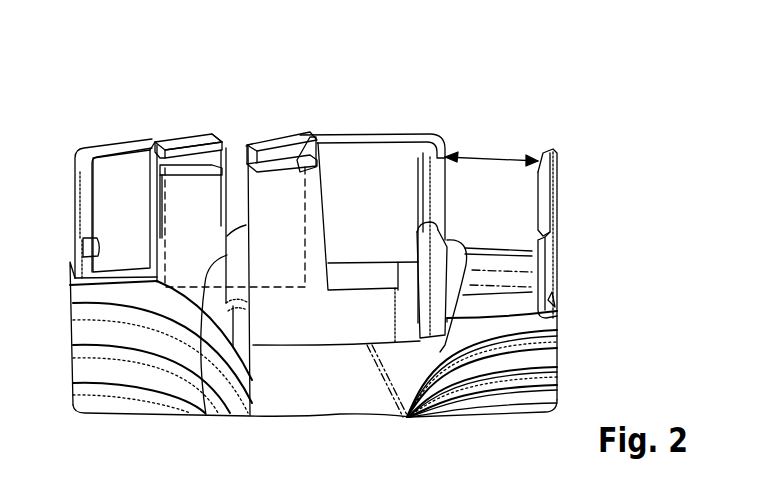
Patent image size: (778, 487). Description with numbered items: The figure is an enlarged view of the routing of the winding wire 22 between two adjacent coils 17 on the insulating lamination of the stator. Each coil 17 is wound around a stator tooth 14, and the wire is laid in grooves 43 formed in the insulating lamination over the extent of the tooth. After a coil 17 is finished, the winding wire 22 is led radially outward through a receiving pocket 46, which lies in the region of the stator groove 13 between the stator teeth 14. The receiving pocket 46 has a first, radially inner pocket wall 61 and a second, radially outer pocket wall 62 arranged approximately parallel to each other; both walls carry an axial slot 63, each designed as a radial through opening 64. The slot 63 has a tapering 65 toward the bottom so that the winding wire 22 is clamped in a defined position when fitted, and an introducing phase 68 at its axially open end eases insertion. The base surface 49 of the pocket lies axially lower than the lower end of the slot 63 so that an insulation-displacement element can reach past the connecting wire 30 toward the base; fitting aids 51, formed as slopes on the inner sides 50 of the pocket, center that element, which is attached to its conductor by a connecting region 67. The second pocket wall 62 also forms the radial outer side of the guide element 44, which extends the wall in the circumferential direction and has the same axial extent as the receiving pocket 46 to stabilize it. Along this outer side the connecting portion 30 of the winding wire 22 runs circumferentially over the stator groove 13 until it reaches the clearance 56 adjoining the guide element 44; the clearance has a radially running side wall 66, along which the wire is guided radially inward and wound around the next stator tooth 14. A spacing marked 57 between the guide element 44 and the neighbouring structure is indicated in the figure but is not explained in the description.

The stator groove 13 is at (370, 403).
The stator tooth 14 is at (487, 397).
The coil 17 is at (115, 370).
The winding wire 22 is at (438, 346).
The connecting portion 30 is at (500, 268).
The groove 43 is at (540, 387).
The guide element 44 is at (363, 137).
The receiving pocket 46 is at (175, 149).
The base surface 49 is at (287, 290).
The inner side 50 is at (156, 201).
The fitting aid 51 is at (155, 145).
The clearance 56 is at (523, 197).
The distance 57 is at (490, 158).
The first pocket wall 61 is at (304, 160).
The second pocket wall 62 is at (273, 143).
The axial slot 63 is at (228, 247).
The radial through opening 64 is at (232, 160).
The tapering 65 is at (201, 360).
The side wall 66 is at (427, 251).
The connecting region 67 is at (86, 238).
The introducing phase 68 is at (214, 136).